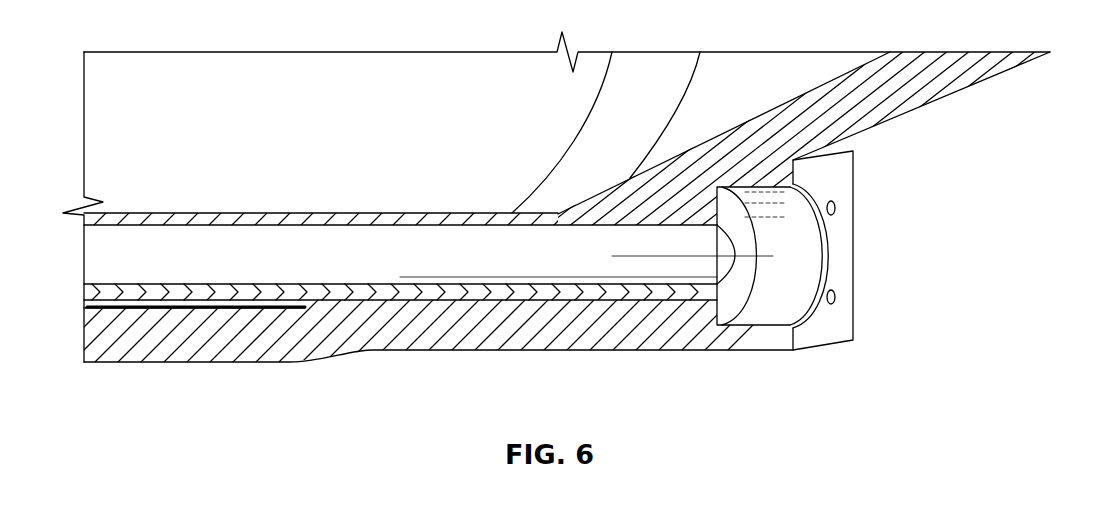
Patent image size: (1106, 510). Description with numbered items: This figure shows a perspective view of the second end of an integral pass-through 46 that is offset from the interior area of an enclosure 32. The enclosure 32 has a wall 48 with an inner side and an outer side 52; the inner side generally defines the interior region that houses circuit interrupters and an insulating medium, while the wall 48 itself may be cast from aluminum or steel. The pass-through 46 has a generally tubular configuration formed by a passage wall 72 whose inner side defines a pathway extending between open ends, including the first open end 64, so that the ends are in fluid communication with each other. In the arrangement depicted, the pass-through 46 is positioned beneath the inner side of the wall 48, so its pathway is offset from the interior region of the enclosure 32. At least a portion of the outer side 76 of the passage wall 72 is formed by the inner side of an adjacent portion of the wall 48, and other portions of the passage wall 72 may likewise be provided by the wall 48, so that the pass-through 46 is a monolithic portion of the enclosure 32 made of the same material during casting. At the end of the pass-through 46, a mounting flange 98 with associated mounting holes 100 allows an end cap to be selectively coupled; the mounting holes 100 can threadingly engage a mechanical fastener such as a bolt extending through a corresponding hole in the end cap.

The wall 48 is at (412, 65).
The outer side 52 is at (735, 68).
The pass-through 46 is at (537, 267).
The passage wall 72 is at (310, 268).
The outer side 76 is at (378, 406).
The enclosure 32 is at (675, 335).
The first open end 64 is at (853, 287).
The mounting flange 98 is at (840, 252).
The mounting holes 100 is at (836, 207).